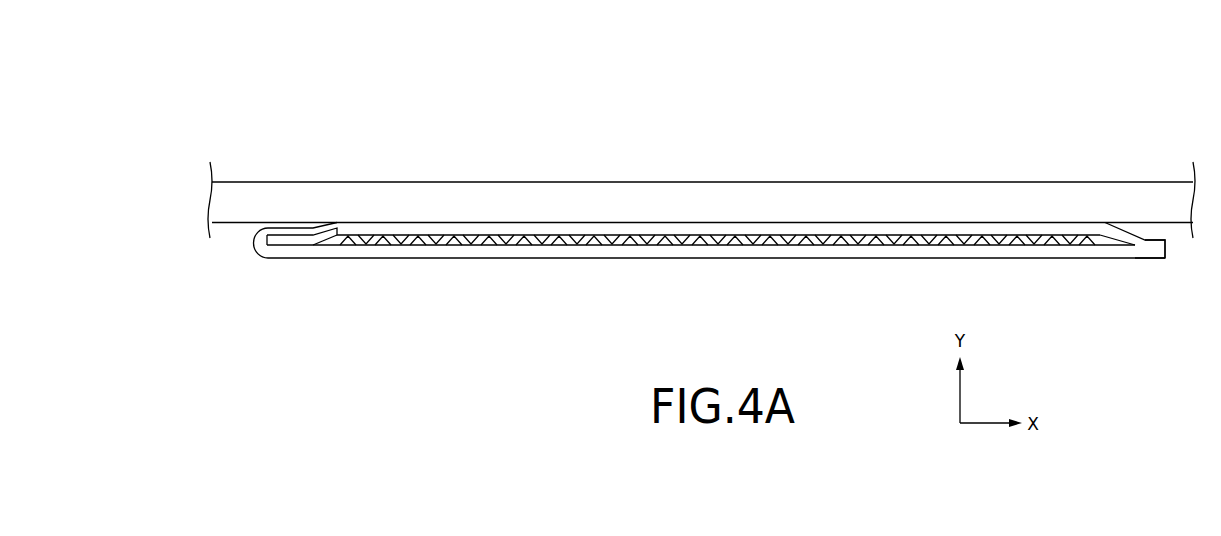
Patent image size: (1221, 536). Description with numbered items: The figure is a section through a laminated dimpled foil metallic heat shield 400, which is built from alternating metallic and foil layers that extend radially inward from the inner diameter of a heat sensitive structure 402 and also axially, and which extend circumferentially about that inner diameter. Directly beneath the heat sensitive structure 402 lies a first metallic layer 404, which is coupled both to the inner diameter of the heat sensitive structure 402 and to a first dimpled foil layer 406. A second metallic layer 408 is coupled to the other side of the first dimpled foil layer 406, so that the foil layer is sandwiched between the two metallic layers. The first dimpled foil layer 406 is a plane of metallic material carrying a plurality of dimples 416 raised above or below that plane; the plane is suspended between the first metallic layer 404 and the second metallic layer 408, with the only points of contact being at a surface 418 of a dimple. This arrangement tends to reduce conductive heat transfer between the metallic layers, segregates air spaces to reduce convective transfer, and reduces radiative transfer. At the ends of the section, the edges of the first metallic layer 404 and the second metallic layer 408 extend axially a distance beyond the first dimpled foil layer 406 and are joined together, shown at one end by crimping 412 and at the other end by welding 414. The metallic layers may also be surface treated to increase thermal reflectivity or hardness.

The laminated dimpled foil metallic heat shield 400 is at (222, 98).
The heat sensitive structure 402 is at (395, 190).
The first metallic layer 404 is at (1035, 230).
The first dimpled foil layer 406 is at (453, 245).
The second metallic layer 408 is at (865, 250).
The crimping 412 is at (278, 253).
The welding 414 is at (1147, 250).
The dimples 416 is at (590, 243).
The surface of a dimple 418 is at (667, 243).